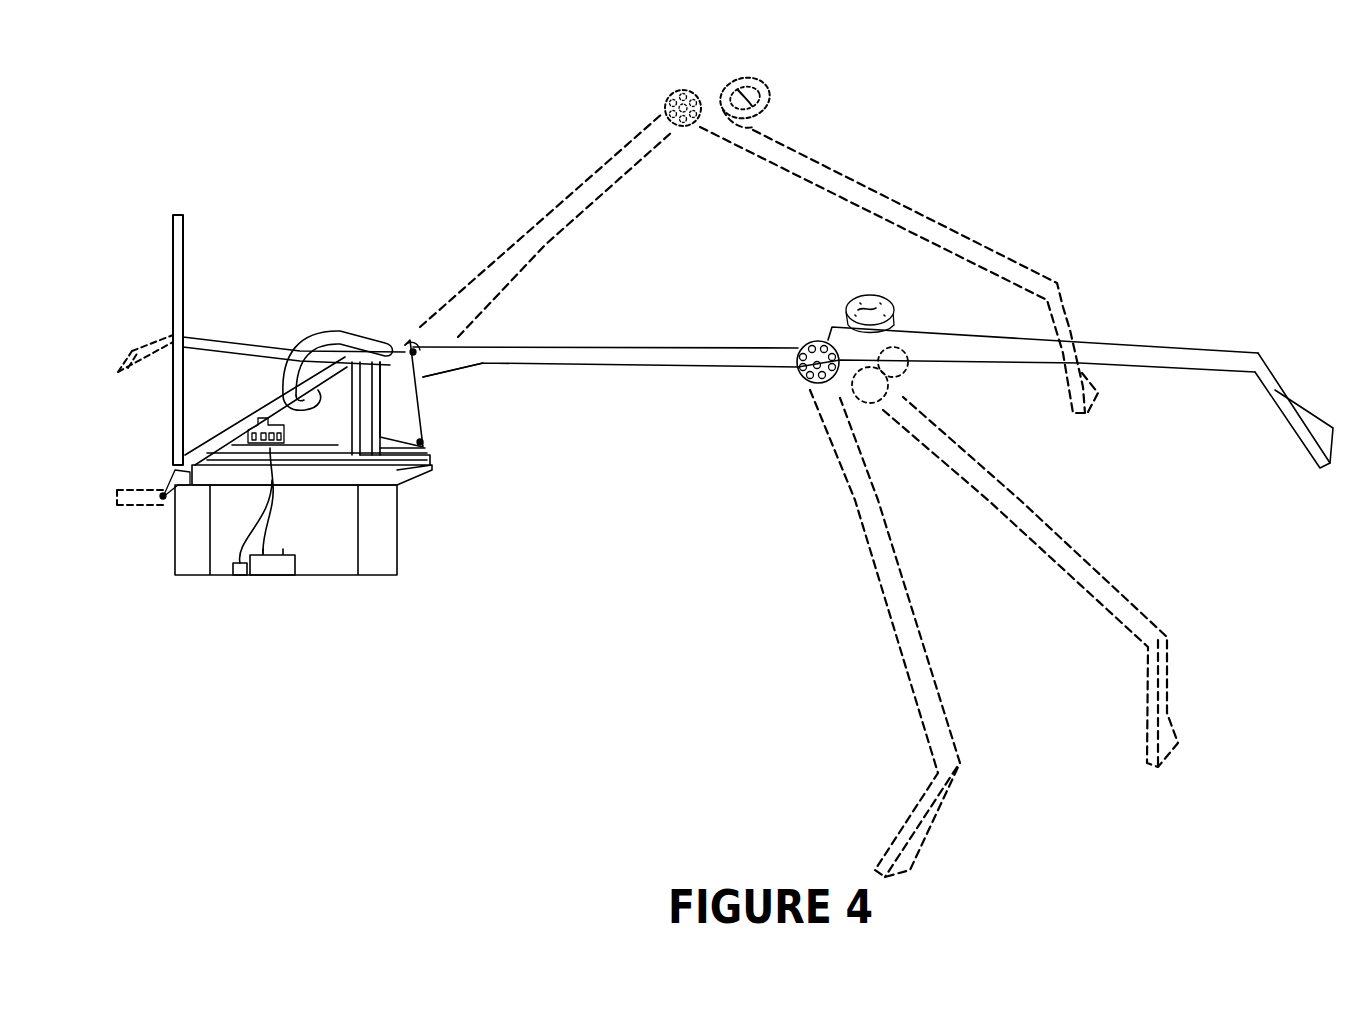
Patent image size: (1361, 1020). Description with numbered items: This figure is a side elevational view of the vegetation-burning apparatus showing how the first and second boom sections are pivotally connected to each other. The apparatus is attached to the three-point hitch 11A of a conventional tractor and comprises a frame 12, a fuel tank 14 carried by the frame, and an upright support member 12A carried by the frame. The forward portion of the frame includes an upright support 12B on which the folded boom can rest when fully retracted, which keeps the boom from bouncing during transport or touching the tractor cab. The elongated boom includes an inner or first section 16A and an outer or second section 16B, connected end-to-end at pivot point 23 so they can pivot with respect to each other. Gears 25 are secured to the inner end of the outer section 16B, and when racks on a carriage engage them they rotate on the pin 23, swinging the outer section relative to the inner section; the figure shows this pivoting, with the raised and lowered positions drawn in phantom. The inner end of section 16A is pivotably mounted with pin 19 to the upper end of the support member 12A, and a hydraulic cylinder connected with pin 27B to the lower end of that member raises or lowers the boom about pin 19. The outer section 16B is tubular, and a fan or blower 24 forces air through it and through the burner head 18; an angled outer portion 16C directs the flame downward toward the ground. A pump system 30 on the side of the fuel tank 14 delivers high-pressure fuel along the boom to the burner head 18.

The three-point hitch 11A is at (130, 490).
The frame 12 is at (330, 486).
The upright support member 12A is at (405, 412).
The upright support 12B is at (182, 278).
The fuel tank 14 is at (383, 532).
The inner or first boom section 16A is at (700, 345).
The outer or second boom section 16B is at (1162, 344).
The angled outer portion 16C is at (1283, 388).
The burner head 18 is at (1325, 405).
The pin 19 is at (413, 345).
The pivot point 23 is at (807, 383).
The fan or blower 24 is at (867, 293).
The gears 25 is at (662, 95).
The pin 27B is at (422, 440).
The pump system 30 is at (275, 567).